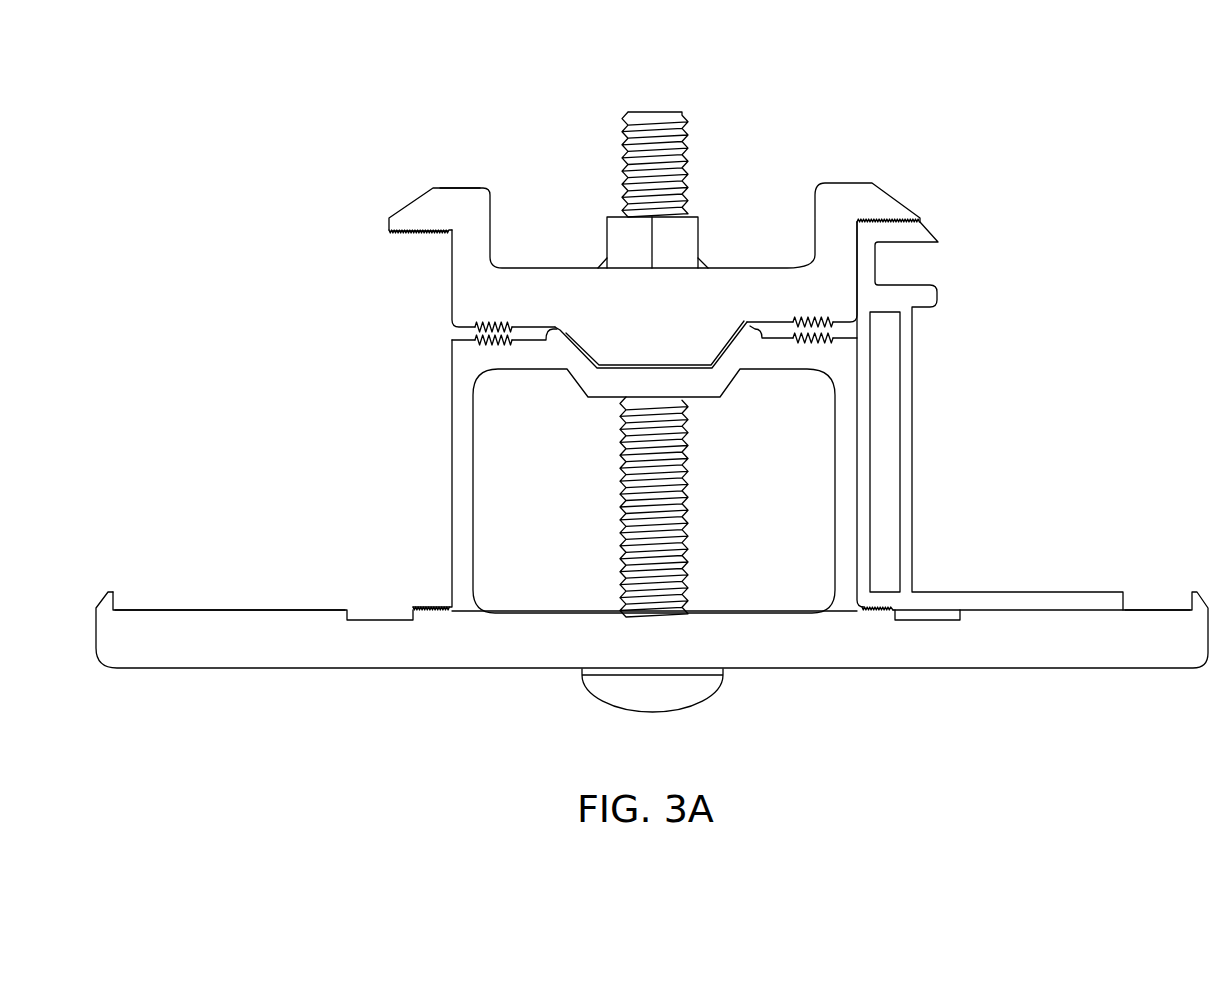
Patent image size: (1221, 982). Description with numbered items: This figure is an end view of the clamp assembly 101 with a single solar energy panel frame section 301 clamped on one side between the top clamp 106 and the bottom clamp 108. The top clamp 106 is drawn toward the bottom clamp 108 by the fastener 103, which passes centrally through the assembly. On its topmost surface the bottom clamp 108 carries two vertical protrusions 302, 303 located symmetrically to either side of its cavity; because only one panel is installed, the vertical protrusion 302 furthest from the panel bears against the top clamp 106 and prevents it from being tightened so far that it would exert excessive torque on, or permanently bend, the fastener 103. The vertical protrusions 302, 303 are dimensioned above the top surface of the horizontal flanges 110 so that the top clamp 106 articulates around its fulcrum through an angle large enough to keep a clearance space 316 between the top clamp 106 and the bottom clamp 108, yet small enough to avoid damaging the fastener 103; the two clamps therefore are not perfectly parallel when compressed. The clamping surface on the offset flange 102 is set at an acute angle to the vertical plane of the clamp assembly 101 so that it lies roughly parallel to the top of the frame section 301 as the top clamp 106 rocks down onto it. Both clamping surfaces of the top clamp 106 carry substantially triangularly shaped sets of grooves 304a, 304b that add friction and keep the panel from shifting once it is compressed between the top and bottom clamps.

The clamp assembly 101 is at (375, 128).
The offset flange 102 is at (405, 207).
The fastener 103 is at (652, 112).
The top clamp 106 is at (450, 188).
The bottom clamp 108 is at (990, 668).
The horizontal flanges 110 is at (222, 608).
The solar energy panel frame section 301 is at (912, 455).
The vertical protrusion 302 is at (556, 330).
The vertical protrusion 303 is at (748, 322).
The set of grooves 304a is at (420, 233).
The set of grooves 304b is at (928, 214).
The clearance space 316 is at (778, 322).